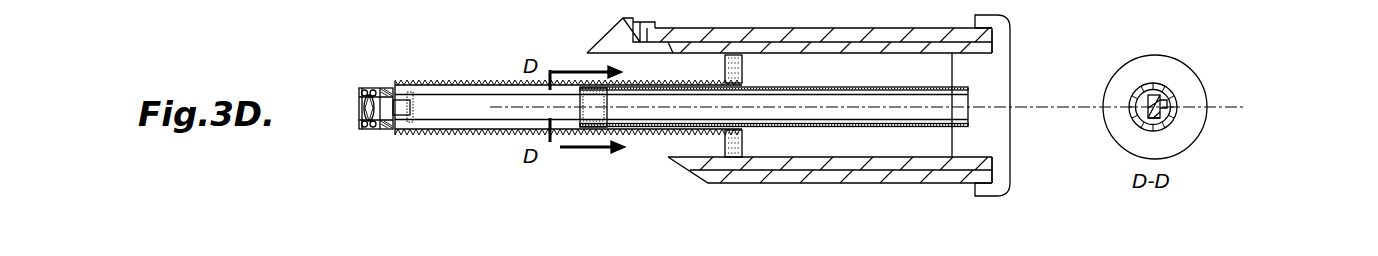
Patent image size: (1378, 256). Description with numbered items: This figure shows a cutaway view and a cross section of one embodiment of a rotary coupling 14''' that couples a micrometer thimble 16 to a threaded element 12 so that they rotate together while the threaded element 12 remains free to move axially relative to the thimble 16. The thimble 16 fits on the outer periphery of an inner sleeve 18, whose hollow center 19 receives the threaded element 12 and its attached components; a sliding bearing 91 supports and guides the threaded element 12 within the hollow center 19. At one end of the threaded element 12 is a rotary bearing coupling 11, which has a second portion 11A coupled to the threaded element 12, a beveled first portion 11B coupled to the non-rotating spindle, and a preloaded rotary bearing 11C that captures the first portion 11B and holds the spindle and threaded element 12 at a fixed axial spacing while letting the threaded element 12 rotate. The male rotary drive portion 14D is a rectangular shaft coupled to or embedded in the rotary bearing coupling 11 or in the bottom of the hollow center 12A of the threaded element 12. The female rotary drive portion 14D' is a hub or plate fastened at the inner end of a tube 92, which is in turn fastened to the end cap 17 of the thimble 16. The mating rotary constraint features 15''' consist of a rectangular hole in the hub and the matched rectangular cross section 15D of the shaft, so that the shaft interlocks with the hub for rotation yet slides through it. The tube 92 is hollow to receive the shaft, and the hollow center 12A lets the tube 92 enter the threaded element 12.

The rotary bearing coupling 11 is at (297, 8).
The second portion 11A is at (407, 88).
The first portion 11B is at (388, 88).
The rotary bearing 11C is at (372, 85).
The threaded element 12 is at (478, 83).
The hollow center 12A is at (422, 122).
The male rotary drive portion 14D is at (927, 117).
The female rotary drive portion 14D' is at (619, 143).
The rotary coupling 14''' is at (939, 126).
The second mating rotary constraint feature 15D is at (1158, 120).
The mating rotary constraint features 15''' is at (1307, 136).
The thimble 16 is at (723, 35).
The end cap 17 is at (1000, 65).
The inner sleeve 18 is at (970, 157).
The hollow center 19 is at (845, 73).
The sliding bearing 91 is at (742, 142).
The tube 92 is at (867, 88).